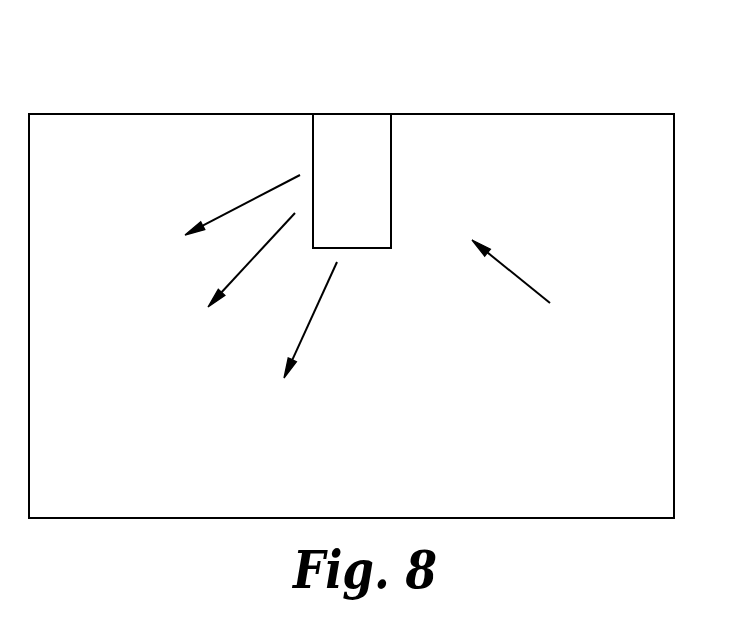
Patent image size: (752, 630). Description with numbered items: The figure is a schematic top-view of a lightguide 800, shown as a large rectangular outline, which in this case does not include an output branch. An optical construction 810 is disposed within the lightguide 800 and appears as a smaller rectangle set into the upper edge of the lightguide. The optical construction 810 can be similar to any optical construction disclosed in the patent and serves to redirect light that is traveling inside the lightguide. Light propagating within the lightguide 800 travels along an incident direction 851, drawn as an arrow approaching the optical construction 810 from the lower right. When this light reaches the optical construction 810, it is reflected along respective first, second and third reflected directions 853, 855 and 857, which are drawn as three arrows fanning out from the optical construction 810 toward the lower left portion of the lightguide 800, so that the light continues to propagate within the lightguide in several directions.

The lightguide 800 is at (628, 66).
The optical construction 810 is at (391, 155).
The incident direction 851 is at (522, 278).
The first reflected direction 853 is at (318, 305).
The second reflected direction 855 is at (245, 270).
The third reflected direction 857 is at (216, 216).